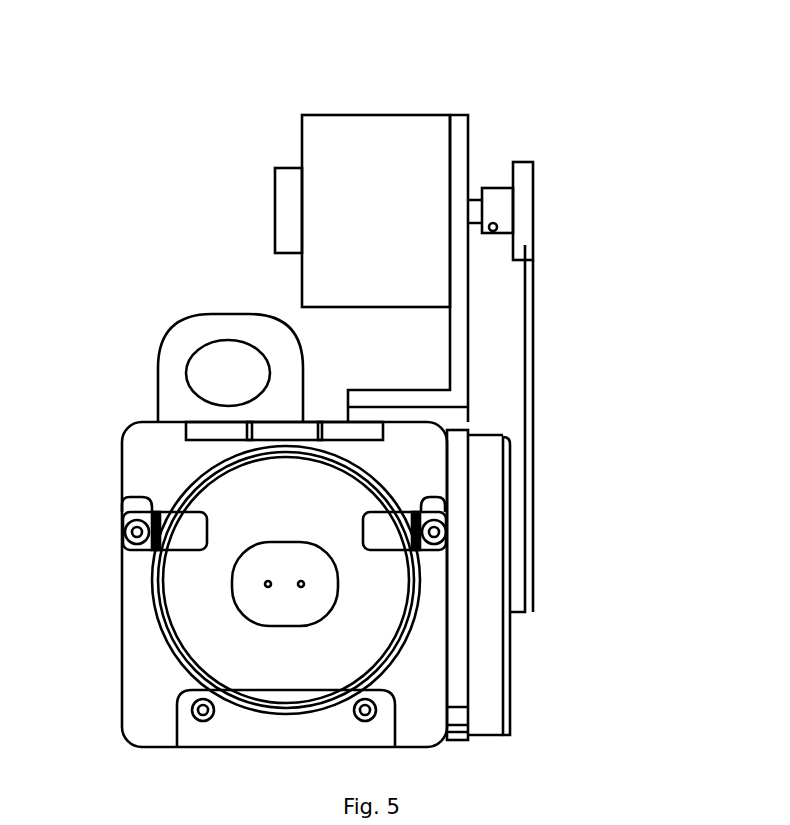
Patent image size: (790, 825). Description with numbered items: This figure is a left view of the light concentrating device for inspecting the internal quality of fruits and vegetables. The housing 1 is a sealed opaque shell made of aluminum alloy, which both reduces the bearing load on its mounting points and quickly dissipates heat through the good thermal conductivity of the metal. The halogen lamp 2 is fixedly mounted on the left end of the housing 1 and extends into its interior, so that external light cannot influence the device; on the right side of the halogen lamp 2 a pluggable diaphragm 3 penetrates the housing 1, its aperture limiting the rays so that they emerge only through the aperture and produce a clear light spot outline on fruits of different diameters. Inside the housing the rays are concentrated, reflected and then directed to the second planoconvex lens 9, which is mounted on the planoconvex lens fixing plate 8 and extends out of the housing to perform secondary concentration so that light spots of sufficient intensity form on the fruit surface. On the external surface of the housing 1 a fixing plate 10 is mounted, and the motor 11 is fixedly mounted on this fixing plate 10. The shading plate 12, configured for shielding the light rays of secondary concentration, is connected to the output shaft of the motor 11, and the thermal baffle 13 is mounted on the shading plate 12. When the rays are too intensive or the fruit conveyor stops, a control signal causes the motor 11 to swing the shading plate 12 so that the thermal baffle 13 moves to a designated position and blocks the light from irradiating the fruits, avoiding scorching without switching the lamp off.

The housing 1 is at (150, 438).
The halogen lamp 2 is at (182, 633).
The diaphragm 3 is at (267, 340).
The planoconvex lens fixing plate 8 is at (483, 713).
The second planoconvex lens 9 is at (507, 622).
The fixing plate 10 is at (462, 418).
The motor 11 is at (352, 132).
The shading plate 12 is at (530, 268).
The thermal baffle 13 is at (517, 593).